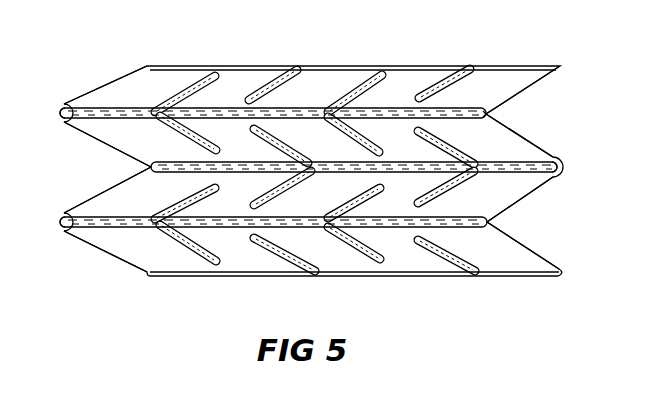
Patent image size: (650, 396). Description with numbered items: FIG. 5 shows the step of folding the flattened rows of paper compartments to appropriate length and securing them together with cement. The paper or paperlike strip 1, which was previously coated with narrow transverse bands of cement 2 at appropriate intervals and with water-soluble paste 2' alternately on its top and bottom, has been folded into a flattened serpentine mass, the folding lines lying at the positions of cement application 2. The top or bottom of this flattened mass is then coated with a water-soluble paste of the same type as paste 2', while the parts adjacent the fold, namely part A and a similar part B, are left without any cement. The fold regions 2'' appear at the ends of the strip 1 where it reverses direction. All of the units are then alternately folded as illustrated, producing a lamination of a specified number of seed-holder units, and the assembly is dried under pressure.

The paper strip 1 is at (65, 128).
The cement bands 2 is at (306, 166).
The water-soluble paste 2' is at (315, 162).
The tube end bend 2'' is at (323, 149).
The uncemented part adjacent fold A is at (90, 136).
The uncemented part adjacent fold B is at (125, 77).